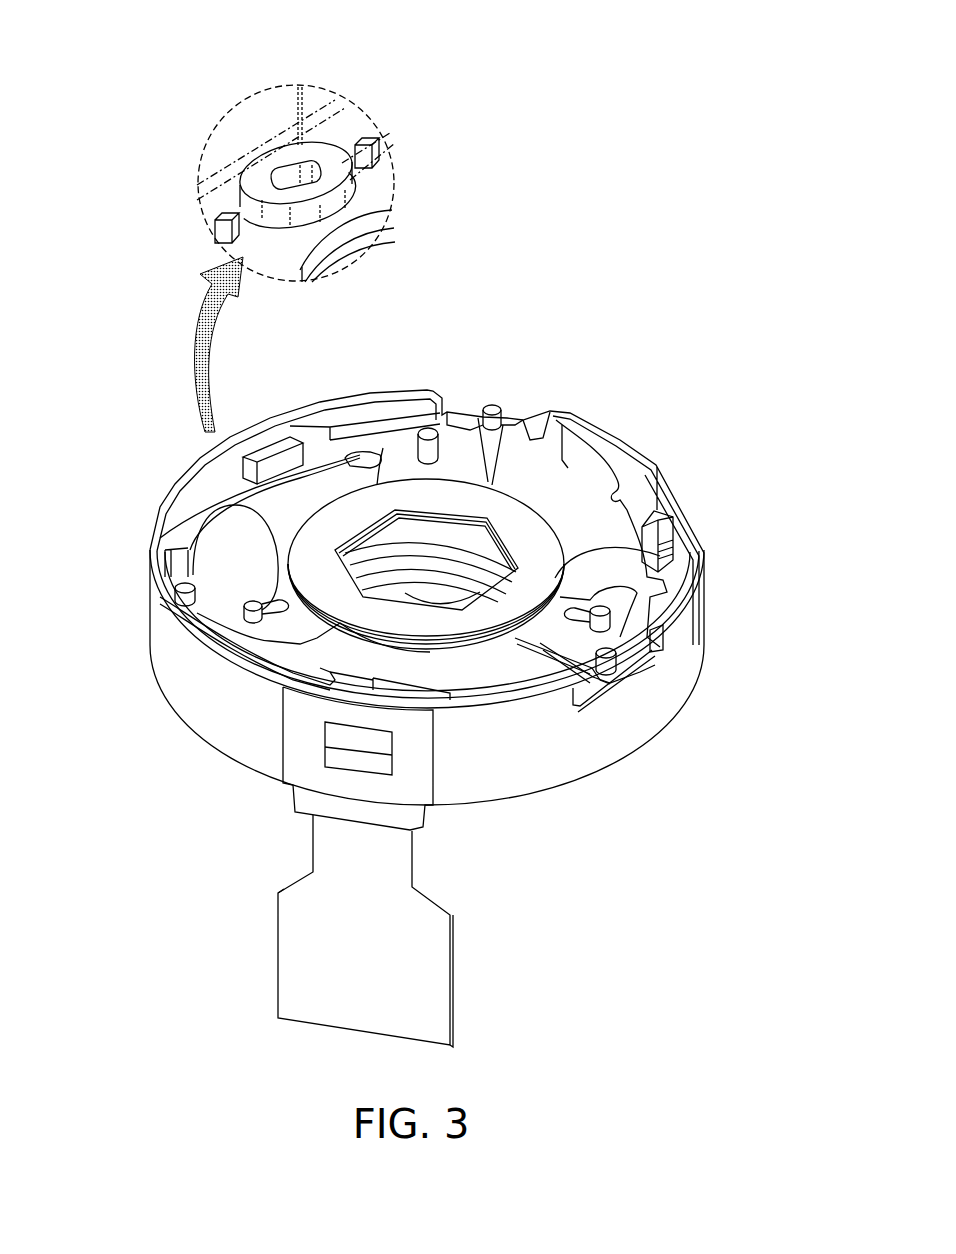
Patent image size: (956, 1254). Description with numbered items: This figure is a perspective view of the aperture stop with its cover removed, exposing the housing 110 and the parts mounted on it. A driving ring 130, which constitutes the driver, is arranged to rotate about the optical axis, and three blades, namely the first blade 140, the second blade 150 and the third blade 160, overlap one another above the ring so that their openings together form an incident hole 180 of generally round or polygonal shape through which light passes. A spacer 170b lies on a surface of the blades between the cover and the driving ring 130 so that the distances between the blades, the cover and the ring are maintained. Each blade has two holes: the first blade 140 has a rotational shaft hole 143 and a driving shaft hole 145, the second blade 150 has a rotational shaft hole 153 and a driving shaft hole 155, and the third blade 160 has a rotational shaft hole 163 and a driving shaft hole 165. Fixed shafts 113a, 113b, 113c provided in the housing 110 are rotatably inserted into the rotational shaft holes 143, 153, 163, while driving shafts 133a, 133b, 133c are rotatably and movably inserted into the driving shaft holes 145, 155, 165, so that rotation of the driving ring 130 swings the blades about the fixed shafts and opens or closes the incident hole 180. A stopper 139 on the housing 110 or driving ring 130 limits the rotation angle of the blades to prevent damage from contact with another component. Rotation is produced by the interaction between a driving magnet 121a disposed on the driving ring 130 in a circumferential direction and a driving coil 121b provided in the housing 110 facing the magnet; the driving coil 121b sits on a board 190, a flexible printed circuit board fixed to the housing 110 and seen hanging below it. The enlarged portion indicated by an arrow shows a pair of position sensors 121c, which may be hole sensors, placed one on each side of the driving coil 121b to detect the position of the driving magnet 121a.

The housing 110 is at (502, 785).
The fixed shaft 113a is at (612, 680).
The fixed shaft 113b is at (490, 402).
The fixed shaft 113c is at (180, 586).
The driving magnet 121a is at (299, 85).
The driving coil 121b is at (277, 167).
The position sensor 121c is at (367, 132).
The driving ring 130 is at (597, 462).
The driving shaft 133a is at (688, 612).
The driving shaft 133b is at (397, 448).
The driving shaft 133c is at (198, 640).
The stopper 139 is at (268, 450).
The first blade 140 is at (665, 556).
The rotational shaft hole 143 is at (612, 672).
The driving shaft hole 145 is at (615, 692).
The second blade 150 is at (383, 476).
The rotational shaft hole 153 is at (520, 414).
The driving shaft hole 155 is at (429, 428).
The third blade 160 is at (220, 556).
The rotational shaft hole 163 is at (158, 613).
The driving shaft hole 165 is at (240, 547).
The spacer 170b is at (563, 466).
The incident hole 180 is at (419, 533).
The board 190 is at (430, 970).